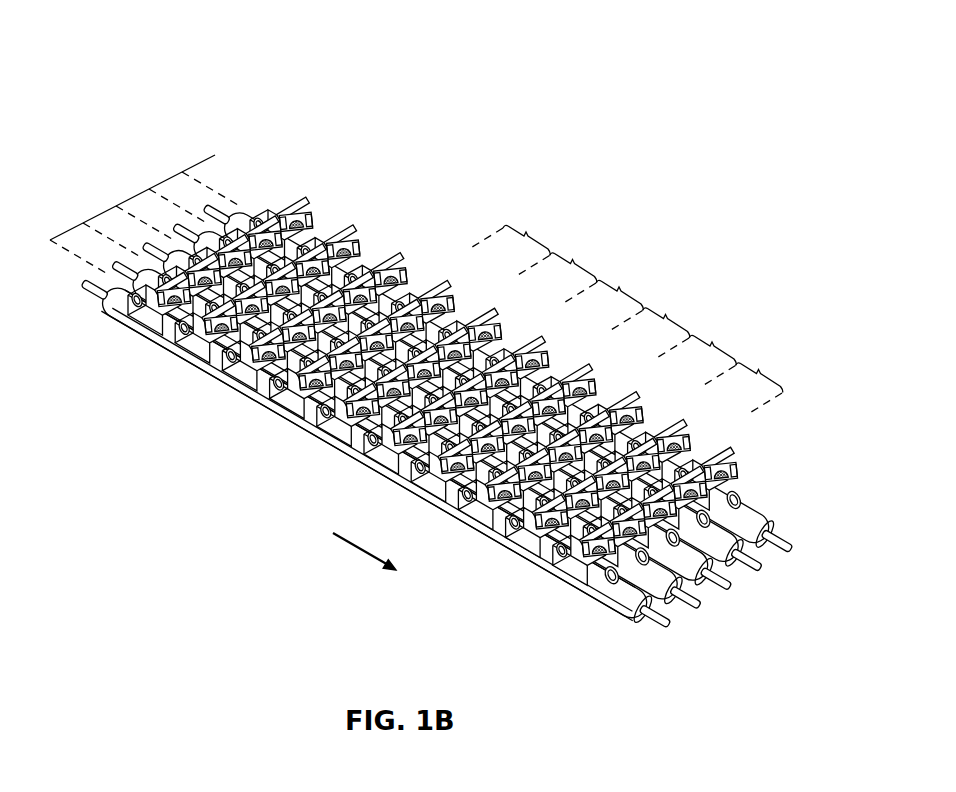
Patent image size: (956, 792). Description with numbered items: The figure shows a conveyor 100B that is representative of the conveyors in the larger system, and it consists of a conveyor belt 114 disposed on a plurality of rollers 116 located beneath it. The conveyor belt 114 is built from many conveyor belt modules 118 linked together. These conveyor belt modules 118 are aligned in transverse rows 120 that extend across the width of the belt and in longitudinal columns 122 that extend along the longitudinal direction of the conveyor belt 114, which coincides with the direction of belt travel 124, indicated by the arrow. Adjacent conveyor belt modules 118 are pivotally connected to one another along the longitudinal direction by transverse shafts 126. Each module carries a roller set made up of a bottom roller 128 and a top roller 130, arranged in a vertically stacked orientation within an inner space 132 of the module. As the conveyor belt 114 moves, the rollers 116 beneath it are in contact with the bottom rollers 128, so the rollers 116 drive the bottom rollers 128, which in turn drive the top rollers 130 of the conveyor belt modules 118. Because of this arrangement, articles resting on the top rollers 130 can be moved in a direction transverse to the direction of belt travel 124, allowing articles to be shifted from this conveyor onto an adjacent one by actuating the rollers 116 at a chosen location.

The conveyor 100B is at (355, 43).
The conveyor belt 114 is at (400, 212).
The rollers 116 is at (697, 624).
The conveyor belt modules 118 is at (343, 240).
The transverse rows 120 is at (632, 310).
The longitudinal columns 122 is at (68, 231).
The direction of belt travel 124 is at (362, 557).
The transverse shafts 126 is at (533, 572).
The bottom roller 128 is at (586, 605).
The top roller 130 is at (430, 302).
The inner space 132 is at (362, 233).